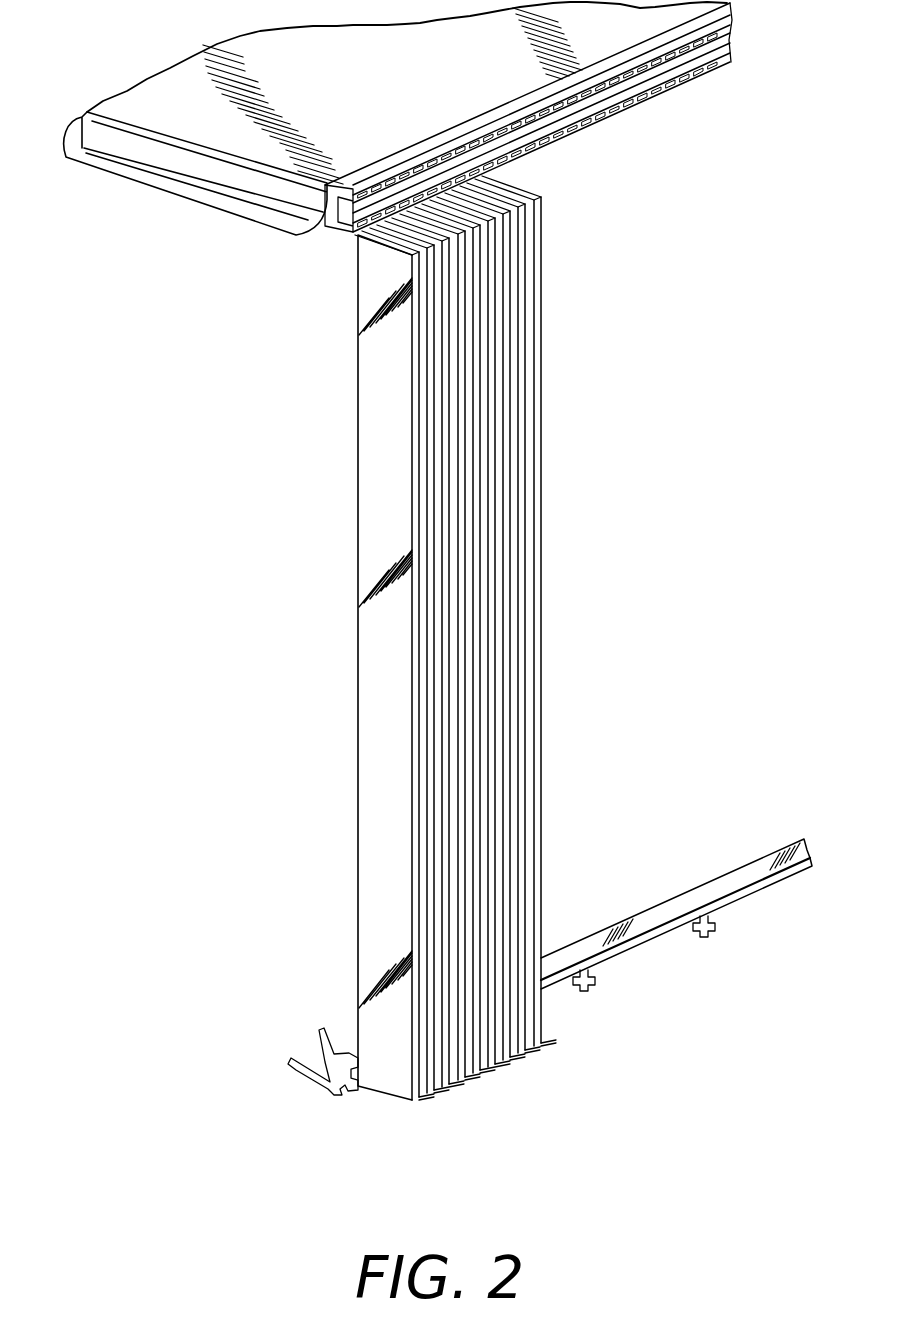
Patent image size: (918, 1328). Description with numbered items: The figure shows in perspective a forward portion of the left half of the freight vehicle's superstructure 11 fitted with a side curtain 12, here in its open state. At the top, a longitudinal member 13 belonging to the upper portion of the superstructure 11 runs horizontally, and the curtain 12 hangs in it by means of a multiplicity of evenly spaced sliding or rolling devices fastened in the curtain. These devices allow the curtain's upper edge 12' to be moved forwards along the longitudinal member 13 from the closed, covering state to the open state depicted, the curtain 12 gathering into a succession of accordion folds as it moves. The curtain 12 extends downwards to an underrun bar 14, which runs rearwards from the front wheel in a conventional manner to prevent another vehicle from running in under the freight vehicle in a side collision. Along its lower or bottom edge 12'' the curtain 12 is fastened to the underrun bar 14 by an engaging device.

The superstructure 11 is at (206, 220).
The side curtain 12 is at (449, 648).
The upper edge of the curtain 12' is at (499, 215).
The lower or bottom edge of the curtain 12'' is at (456, 1087).
The longitudinal member 13 is at (447, 112).
The underrun bar 14 is at (628, 976).